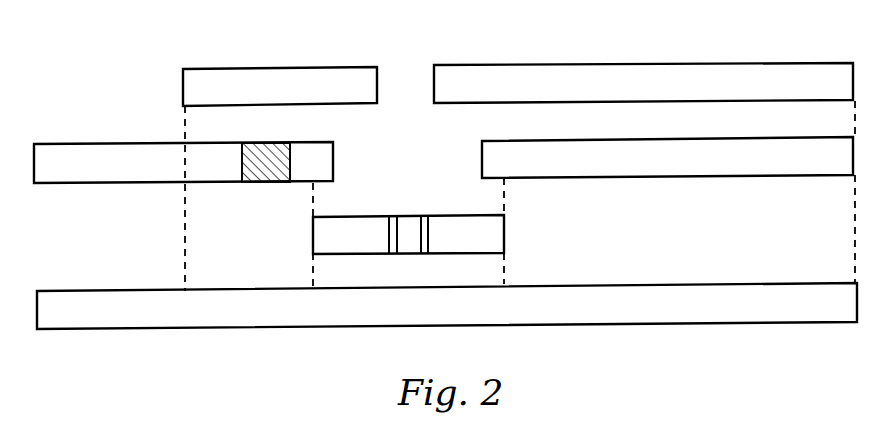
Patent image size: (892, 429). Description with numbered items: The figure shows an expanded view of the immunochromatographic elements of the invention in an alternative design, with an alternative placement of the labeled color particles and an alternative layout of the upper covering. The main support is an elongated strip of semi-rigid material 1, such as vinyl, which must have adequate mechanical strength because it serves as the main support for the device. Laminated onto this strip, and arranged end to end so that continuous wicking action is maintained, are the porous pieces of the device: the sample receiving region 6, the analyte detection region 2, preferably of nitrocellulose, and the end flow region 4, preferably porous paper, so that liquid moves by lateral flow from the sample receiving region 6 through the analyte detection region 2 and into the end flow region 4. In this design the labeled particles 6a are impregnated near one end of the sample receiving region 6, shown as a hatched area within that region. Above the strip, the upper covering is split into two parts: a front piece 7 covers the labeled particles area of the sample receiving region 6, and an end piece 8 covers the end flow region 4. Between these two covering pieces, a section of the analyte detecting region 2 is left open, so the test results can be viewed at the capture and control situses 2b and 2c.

The semi-rigid material 1 is at (745, 289).
The analyte detection region 2 is at (506, 237).
The capture situs 2b is at (391, 216).
The control situs 2c is at (422, 216).
The end flow region 4 is at (687, 165).
The sample receiving region 6 is at (212, 170).
The labeled particles 6a is at (270, 173).
The front piece 7 is at (266, 79).
The end piece 8 is at (617, 79).